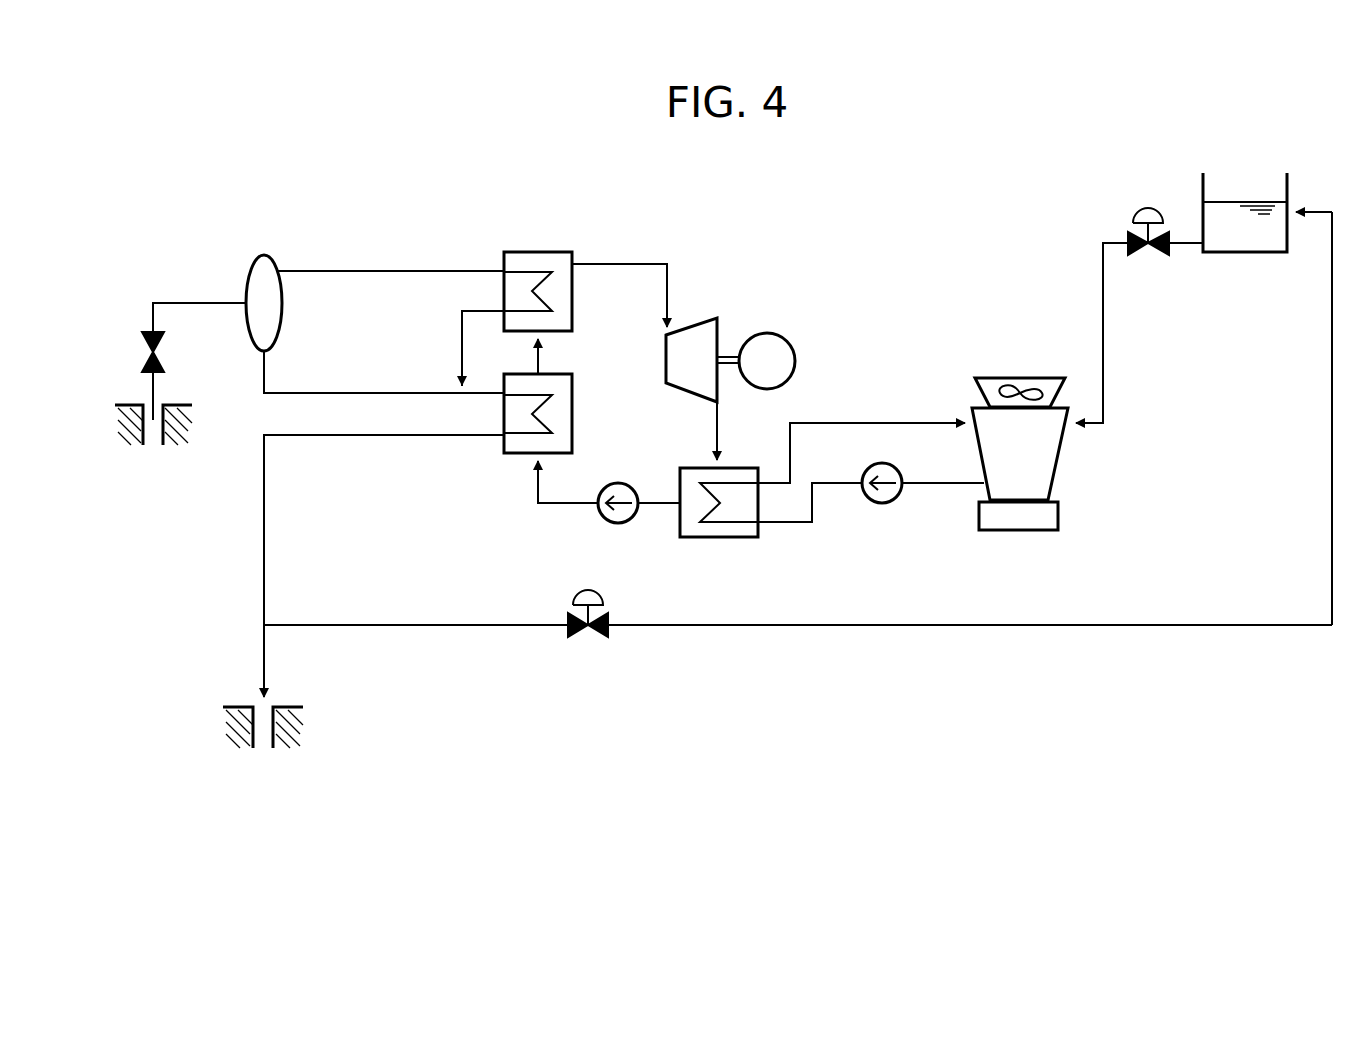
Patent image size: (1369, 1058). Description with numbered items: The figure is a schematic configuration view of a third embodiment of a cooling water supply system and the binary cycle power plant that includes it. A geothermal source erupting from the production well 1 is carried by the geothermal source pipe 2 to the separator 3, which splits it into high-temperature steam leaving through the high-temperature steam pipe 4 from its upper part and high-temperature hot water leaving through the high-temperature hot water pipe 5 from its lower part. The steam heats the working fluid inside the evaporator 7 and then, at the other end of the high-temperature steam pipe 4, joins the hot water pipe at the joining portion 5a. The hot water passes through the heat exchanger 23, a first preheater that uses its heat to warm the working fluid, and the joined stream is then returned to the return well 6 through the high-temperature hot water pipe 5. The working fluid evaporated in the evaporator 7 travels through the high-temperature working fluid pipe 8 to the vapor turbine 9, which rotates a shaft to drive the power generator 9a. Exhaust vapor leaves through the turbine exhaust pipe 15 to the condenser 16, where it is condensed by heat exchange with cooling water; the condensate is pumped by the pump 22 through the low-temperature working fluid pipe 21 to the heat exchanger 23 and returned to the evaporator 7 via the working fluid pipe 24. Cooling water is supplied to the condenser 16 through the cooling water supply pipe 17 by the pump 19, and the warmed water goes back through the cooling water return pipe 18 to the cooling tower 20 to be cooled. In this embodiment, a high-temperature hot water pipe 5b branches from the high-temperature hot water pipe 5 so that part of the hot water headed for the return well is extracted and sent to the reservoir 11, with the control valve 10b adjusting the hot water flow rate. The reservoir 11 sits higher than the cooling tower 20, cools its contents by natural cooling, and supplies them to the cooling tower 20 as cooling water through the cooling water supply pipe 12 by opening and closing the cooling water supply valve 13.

The production well 1 is at (110, 320).
The geothermal source pipe 2 is at (205, 300).
The separator 3 is at (265, 255).
The high-temperature steam pipe 4 is at (328, 270).
The high-temperature hot water pipe 5 is at (337, 393).
The joining portion 5a is at (458, 391).
The high-temperature hot water pipe 5b is at (430, 626).
The return well 6 is at (240, 672).
The evaporator 7 is at (537, 252).
The high-temperature working fluid pipe 8 is at (615, 264).
The vapor turbine 9 is at (693, 325).
The power generator 9a is at (796, 360).
The control valve 10b is at (591, 637).
The reservoir 11 is at (1240, 253).
The cooling water supply pipe 12 is at (1103, 336).
The cooling water supply valve 13 is at (1154, 256).
The turbine exhaust pipe 15 is at (717, 425).
The condenser 16 is at (717, 537).
The cooling water supply pipe 17 is at (787, 522).
The cooling water return pipe 18 is at (916, 423).
The pump 19 is at (885, 504).
The cooling tower 20 is at (1058, 452).
The low-temperature working fluid pipe 21 is at (557, 505).
The pump 22 is at (617, 524).
The heat exchanger 23 is at (572, 410).
The working fluid pipe 24 is at (539, 358).